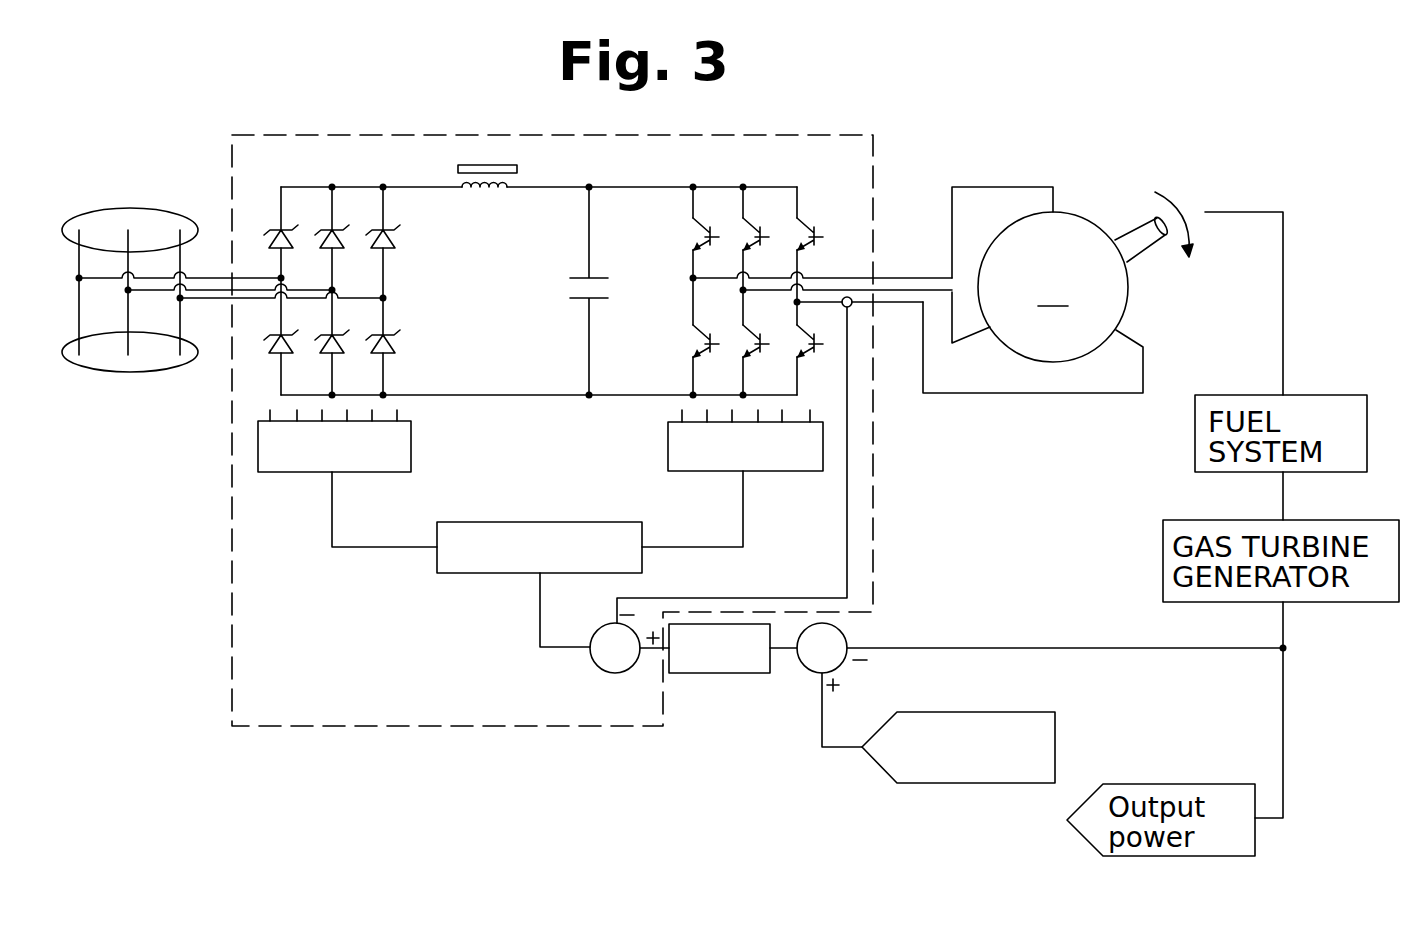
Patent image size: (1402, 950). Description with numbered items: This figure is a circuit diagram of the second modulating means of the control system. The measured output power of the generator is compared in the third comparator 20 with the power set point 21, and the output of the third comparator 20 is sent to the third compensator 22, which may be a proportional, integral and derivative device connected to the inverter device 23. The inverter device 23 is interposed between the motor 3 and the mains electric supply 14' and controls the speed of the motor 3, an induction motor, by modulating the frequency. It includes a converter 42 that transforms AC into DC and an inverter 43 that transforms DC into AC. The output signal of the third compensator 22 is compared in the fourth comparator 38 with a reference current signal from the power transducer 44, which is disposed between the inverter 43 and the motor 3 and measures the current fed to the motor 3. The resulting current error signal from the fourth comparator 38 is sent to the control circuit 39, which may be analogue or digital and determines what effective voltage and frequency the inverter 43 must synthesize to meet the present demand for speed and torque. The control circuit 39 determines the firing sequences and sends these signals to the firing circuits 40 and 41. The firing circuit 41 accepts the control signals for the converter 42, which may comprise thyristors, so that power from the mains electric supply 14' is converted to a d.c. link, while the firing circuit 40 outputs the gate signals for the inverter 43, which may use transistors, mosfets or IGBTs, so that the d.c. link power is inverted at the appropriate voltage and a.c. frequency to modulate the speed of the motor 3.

The mains electric supply 14' is at (222, 251).
The converter 42 is at (347, 184).
The inverter 43 is at (770, 184).
The motor 3 is at (1103, 291).
The power transducer 44 is at (851, 308).
The firing circuit 41 is at (317, 459).
The firing circuit 40 is at (727, 461).
The control circuit 39 is at (524, 563).
The third compensator 22 is at (702, 663).
The fourth comparator 38 is at (612, 672).
The third comparator 20 is at (847, 635).
The power set point 21 is at (1008, 712).
The inverter device 23 is at (398, 727).